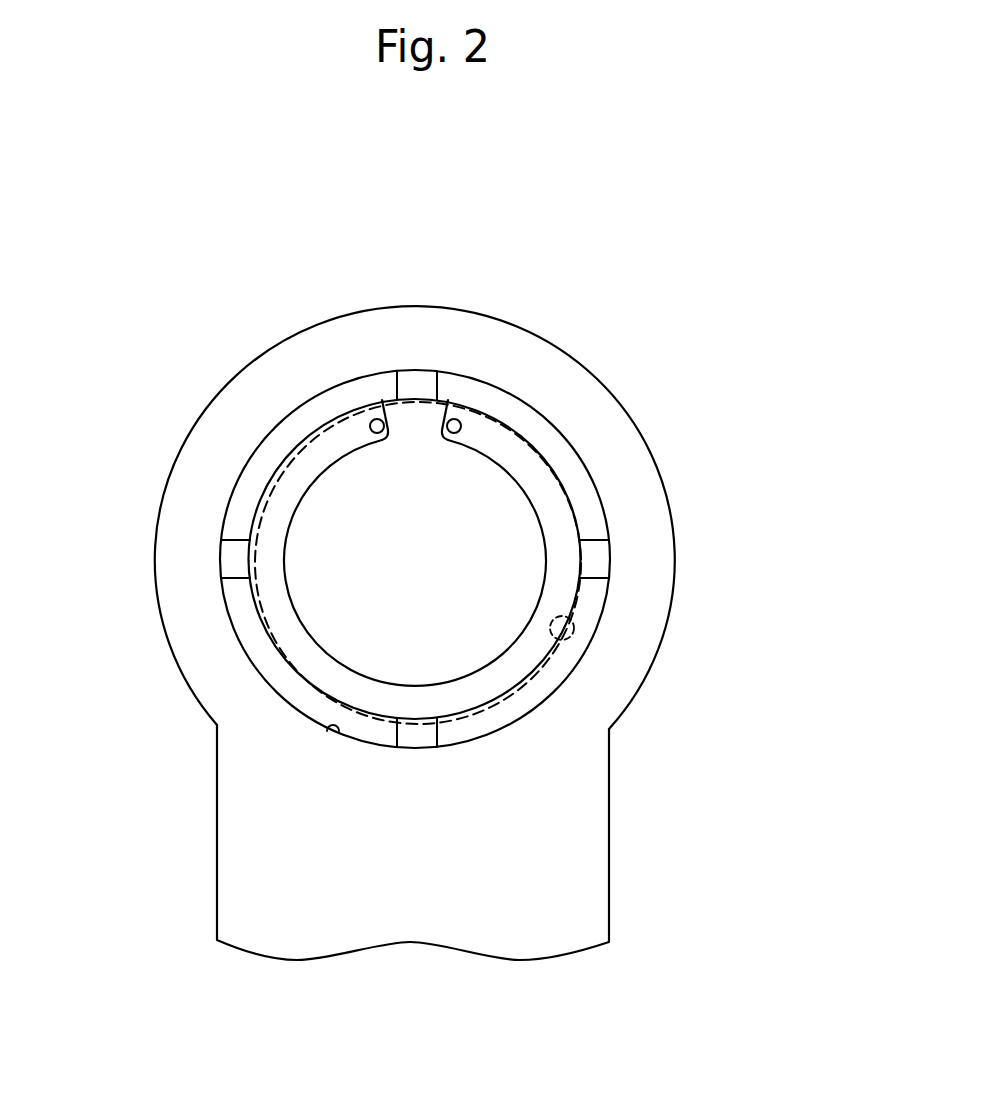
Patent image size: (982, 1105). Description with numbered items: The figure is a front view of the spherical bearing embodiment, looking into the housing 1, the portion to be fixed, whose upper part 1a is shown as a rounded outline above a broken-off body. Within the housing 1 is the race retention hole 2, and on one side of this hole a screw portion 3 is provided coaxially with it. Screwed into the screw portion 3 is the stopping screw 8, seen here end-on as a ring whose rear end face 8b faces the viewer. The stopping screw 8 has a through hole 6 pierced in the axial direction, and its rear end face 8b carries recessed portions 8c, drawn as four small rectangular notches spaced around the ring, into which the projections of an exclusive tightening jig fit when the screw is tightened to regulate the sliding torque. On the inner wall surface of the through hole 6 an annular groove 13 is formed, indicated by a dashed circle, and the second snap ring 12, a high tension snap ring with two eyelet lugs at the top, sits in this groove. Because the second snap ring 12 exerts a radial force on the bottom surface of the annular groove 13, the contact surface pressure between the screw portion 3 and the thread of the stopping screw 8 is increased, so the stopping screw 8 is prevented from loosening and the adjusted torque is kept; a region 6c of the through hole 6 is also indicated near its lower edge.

The housing 1 is at (549, 342).
The cylindrical portion of housing 1a is at (577, 402).
The race retention hole 2 is at (357, 488).
The screw portion 3 is at (331, 731).
The through hole 6 is at (303, 667).
The groove portion 6c is at (481, 703).
The stopping screw 8 is at (250, 665).
The rear end face 8b is at (514, 708).
The recessed portion 8c is at (416, 392).
The second snap ring 12 is at (540, 487).
The annular groove 13 is at (572, 645).